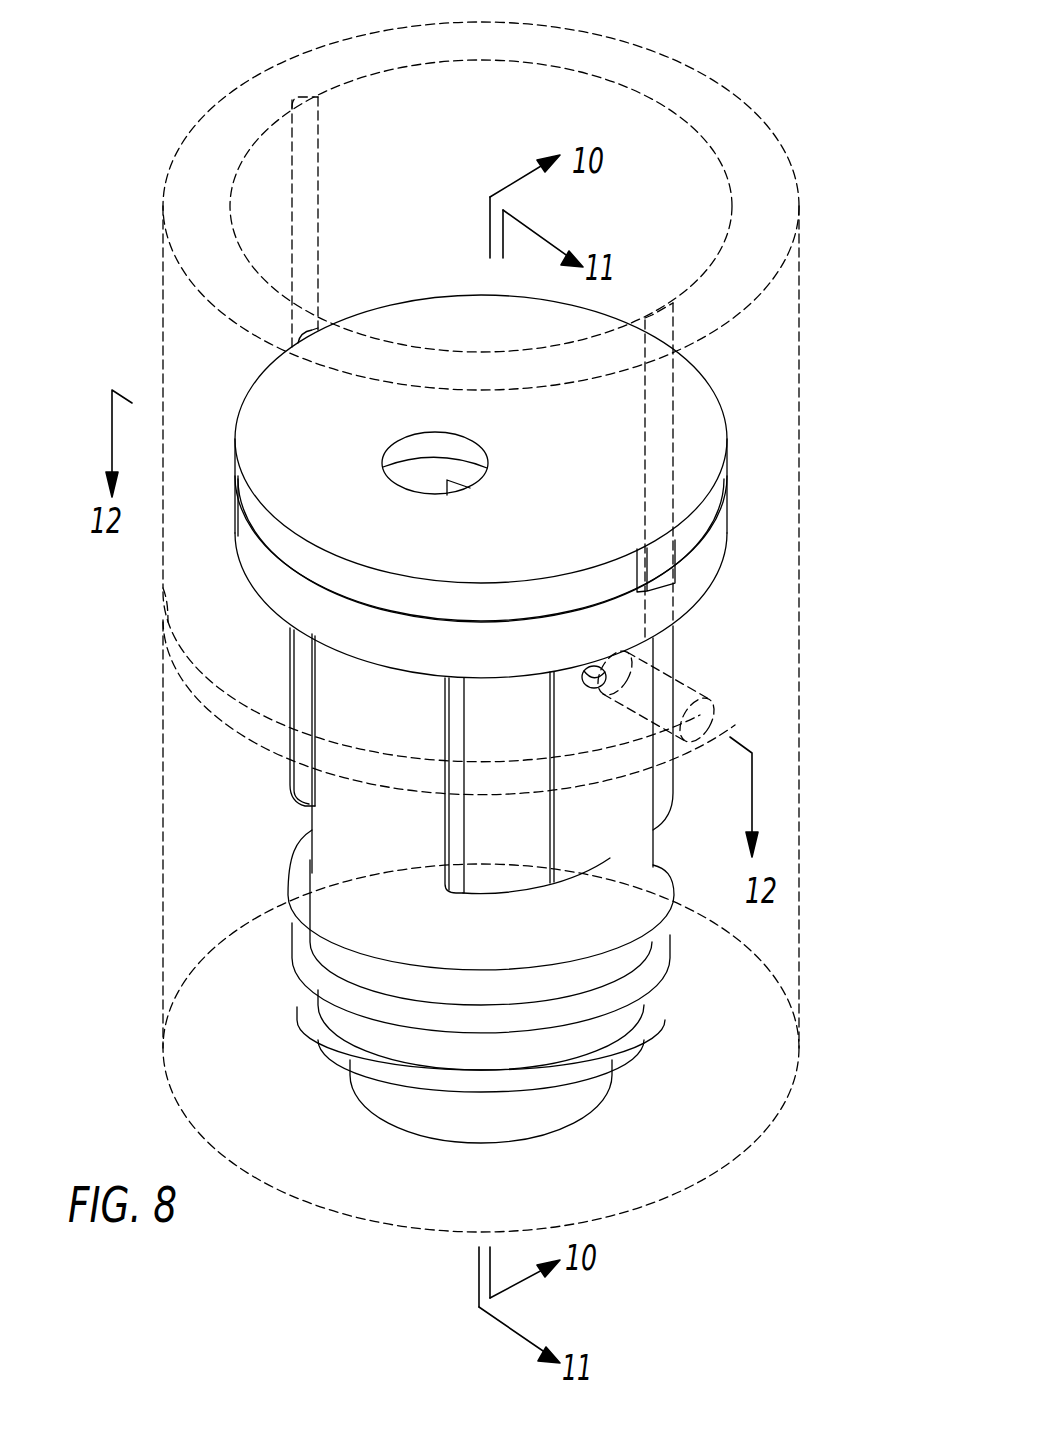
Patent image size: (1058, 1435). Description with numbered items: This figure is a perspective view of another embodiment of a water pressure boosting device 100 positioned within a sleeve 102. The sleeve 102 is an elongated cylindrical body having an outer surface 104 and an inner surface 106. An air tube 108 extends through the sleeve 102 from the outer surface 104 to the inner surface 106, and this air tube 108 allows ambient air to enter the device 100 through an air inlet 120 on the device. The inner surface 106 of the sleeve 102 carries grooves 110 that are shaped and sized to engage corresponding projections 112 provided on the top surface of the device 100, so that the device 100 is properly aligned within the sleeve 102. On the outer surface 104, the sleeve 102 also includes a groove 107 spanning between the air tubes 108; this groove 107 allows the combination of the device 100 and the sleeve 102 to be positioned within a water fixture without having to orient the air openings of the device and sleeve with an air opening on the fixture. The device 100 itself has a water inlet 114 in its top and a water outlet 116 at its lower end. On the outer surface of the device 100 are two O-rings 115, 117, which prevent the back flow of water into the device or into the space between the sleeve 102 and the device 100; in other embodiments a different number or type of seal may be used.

The water pressure boosting device 100 is at (595, 330).
The sleeve 102 is at (630, 67).
The outer surface 104 is at (782, 347).
The inner surface 106 is at (420, 110).
The groove 107 is at (220, 695).
The air tube 108 is at (705, 718).
The grooves 110 is at (305, 107).
The projections 112 is at (302, 337).
The water inlet 114 is at (433, 472).
The O-ring 115 is at (578, 973).
The water outlet 116 is at (420, 1110).
The O-ring 117 is at (595, 1027).
The air inlet 120 is at (590, 683).